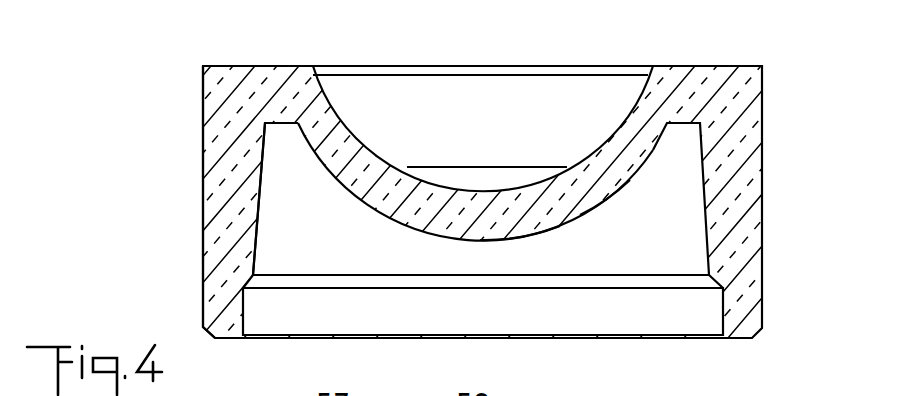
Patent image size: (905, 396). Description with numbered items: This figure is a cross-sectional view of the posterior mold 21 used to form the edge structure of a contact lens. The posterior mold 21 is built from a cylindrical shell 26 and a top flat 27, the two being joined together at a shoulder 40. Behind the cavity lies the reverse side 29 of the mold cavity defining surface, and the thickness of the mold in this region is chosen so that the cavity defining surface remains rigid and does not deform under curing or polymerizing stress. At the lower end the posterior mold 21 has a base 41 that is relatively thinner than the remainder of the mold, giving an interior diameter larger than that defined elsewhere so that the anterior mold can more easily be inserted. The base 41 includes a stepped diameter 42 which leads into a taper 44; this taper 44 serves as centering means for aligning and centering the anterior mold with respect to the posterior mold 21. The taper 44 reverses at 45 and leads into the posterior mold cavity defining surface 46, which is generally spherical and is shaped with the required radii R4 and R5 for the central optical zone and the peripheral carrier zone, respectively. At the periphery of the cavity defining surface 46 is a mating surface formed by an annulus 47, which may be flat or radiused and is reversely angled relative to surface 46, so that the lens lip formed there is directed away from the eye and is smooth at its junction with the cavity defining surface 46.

The posterior mold 21 is at (720, 48).
The top flat 27 is at (278, 76).
The shoulder 40 is at (213, 97).
The cylindrical shell 26 is at (211, 218).
The reverse side of the posterior mold cavity defining surface 29 is at (370, 140).
The posterior mold cavity defining surface 46 is at (425, 236).
The taper reversal 45 is at (279, 125).
The taper 44 is at (258, 220).
The stepped diameter 42 is at (255, 282).
The base 41 is at (228, 325).
The annulus 47 is at (645, 162).
The radius for the central optical zone R4 is at (536, 242).
The radius for the peripheral carrier zone R5 is at (606, 205).